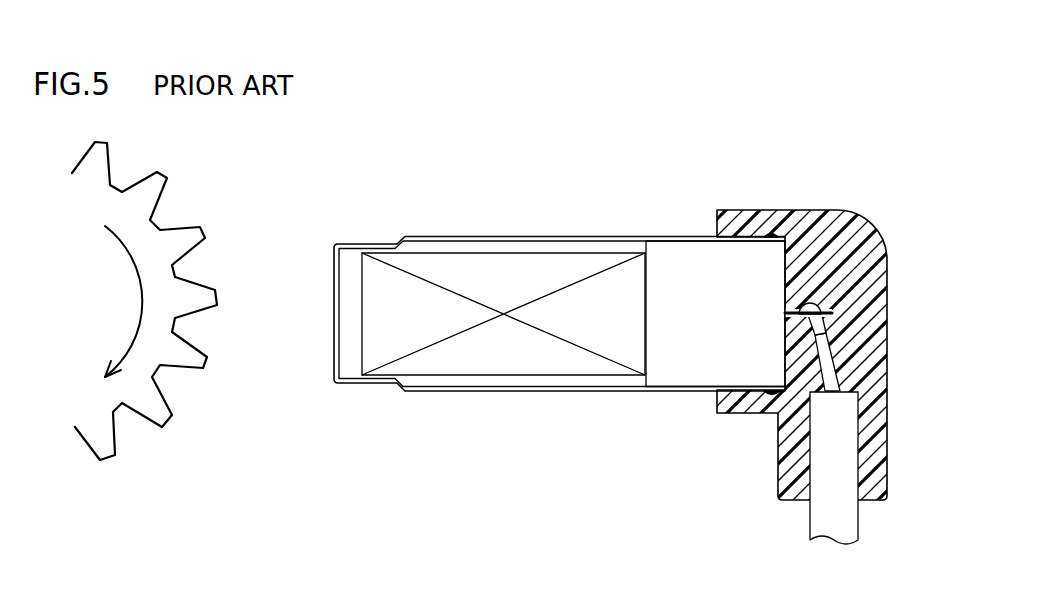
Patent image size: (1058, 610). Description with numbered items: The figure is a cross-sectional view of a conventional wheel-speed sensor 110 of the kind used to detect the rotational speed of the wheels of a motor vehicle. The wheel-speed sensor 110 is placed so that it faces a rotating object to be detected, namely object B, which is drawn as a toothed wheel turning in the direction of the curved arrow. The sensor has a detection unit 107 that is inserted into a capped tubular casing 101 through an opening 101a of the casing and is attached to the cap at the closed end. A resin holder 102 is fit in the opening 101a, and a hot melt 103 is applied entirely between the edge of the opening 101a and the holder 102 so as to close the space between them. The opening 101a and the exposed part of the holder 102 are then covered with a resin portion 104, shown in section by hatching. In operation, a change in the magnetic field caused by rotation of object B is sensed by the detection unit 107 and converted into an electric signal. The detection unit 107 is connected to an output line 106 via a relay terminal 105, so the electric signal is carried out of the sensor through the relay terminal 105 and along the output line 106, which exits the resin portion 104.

The object B is at (147, 193).
The casing 101 is at (470, 391).
The opening 101a is at (773, 392).
The resin holder 102 is at (685, 280).
The hot melt 103 is at (767, 231).
The resin portion 104 is at (860, 352).
The relay terminal 105 is at (828, 310).
The output line 106 is at (832, 440).
The detection unit 107 is at (505, 273).
The wheel-speed sensor 110 is at (870, 215).